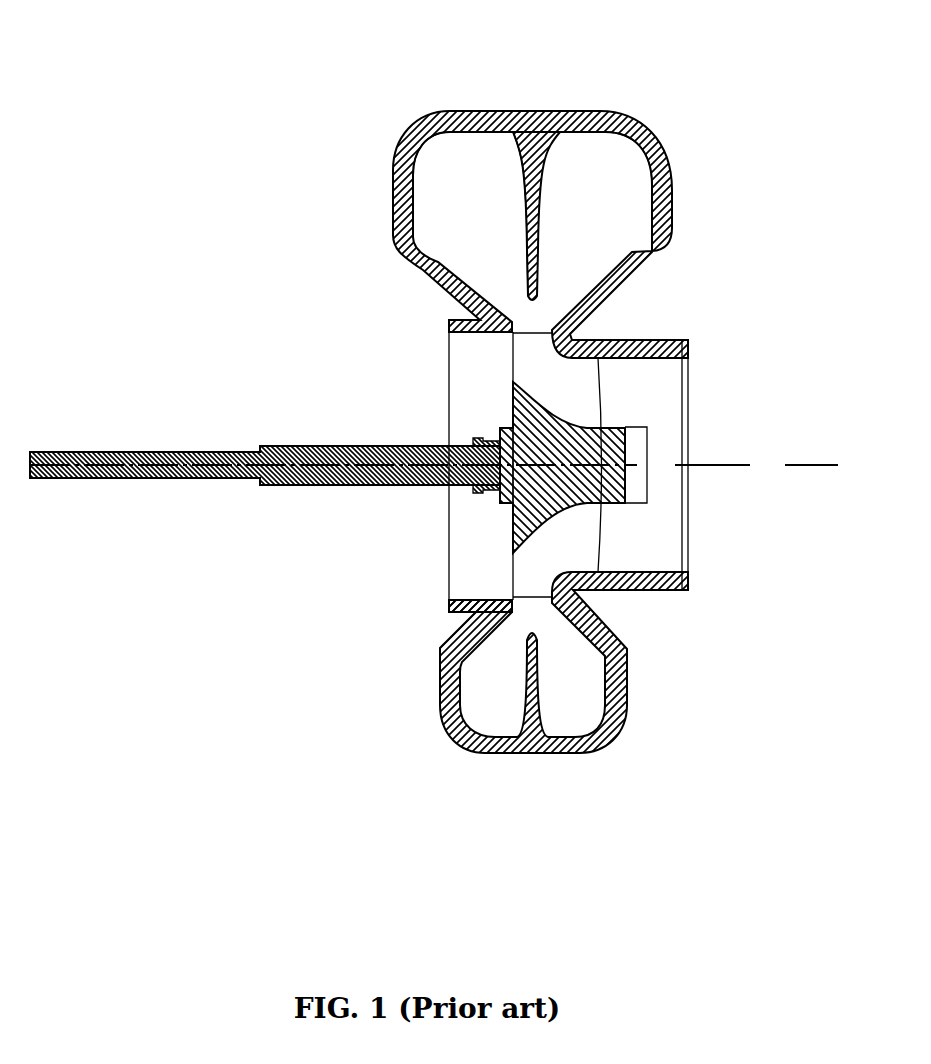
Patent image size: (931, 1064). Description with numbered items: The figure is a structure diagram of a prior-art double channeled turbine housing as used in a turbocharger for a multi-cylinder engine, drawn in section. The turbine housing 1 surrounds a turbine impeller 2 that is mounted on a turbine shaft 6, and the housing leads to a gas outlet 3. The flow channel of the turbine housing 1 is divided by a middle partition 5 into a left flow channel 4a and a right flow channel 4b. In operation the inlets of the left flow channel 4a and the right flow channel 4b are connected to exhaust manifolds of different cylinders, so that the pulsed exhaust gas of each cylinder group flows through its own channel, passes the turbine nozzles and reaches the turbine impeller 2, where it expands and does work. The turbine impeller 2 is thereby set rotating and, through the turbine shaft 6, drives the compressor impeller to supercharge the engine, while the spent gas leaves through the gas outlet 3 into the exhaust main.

The turbine housing 1 is at (430, 128).
The turbine impeller 2 is at (515, 417).
The gas outlet 3 is at (658, 372).
The left flow channel 4a is at (487, 265).
The right flow channel 4b is at (605, 233).
The middle partition 5 is at (540, 230).
The turbine shaft 6 is at (377, 445).